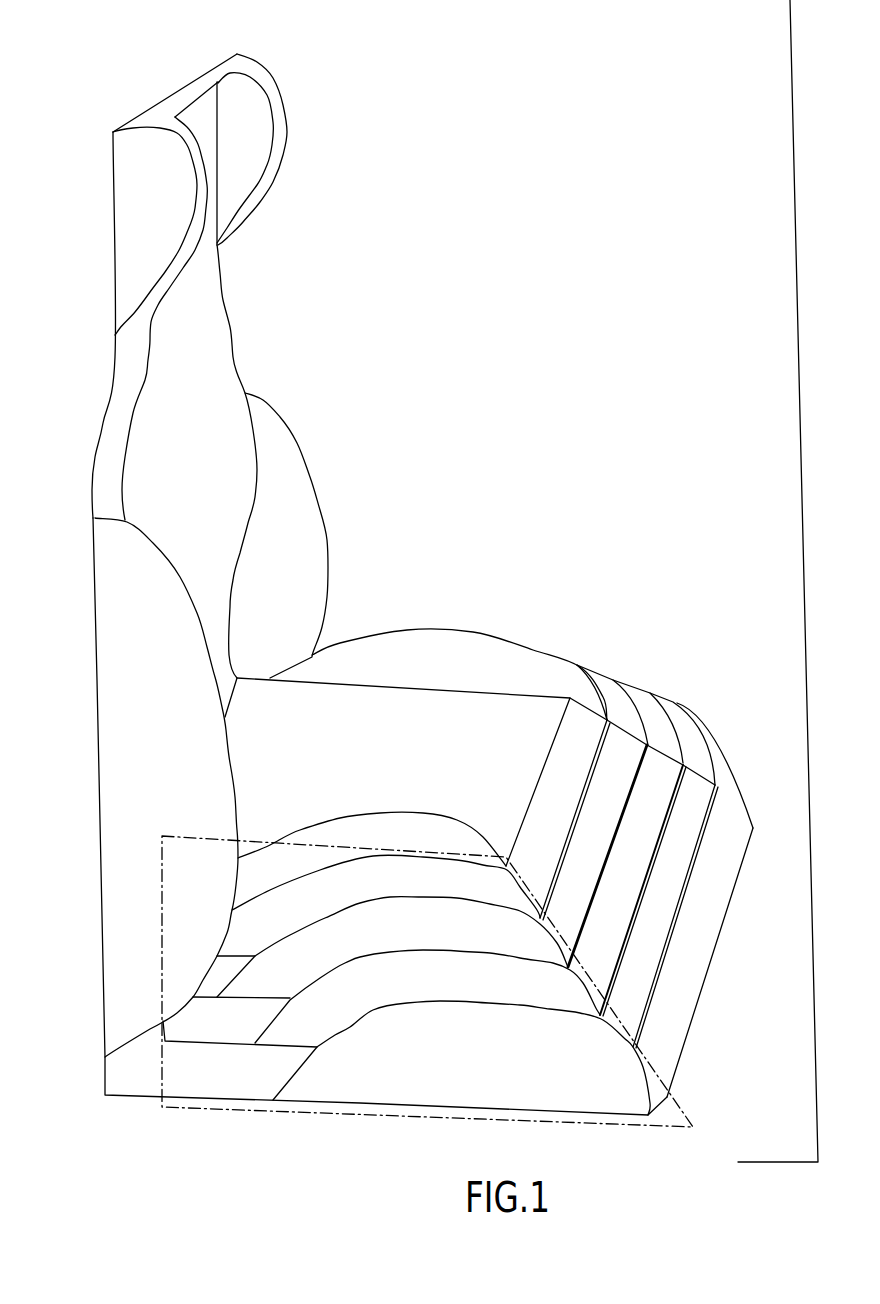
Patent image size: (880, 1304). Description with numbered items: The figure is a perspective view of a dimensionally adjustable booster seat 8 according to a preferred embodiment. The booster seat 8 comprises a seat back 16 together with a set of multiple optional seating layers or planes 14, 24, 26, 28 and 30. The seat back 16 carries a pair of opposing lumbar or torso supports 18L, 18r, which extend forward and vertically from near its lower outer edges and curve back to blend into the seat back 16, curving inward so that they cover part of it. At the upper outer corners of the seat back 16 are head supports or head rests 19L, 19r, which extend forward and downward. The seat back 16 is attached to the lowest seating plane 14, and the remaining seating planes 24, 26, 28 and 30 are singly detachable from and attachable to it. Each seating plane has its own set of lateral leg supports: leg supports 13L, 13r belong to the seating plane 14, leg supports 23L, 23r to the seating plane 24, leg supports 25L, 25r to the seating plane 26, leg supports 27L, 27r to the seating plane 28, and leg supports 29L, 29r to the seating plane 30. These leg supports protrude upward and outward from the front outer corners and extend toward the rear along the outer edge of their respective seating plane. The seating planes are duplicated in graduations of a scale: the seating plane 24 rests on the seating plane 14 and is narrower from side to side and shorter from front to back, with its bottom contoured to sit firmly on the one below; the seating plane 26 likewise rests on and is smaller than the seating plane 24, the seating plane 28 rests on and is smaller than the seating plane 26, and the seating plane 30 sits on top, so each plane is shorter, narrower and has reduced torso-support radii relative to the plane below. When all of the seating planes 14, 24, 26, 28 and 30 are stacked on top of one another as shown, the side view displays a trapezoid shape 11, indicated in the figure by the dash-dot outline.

The booster seat 8 is at (801, 393).
The trapezoid shape 11 is at (683, 1101).
The lateral leg support 13L is at (727, 765).
The lateral leg support 13r is at (497, 1041).
The seating plane 14 is at (707, 938).
The seat back 16 is at (209, 487).
The torso support 18L is at (303, 589).
The torso support 18r is at (173, 809).
The head rest 19L is at (265, 166).
The head rest 19r is at (175, 233).
The lateral leg support 23L is at (673, 700).
The lateral leg support 23r is at (475, 986).
The seating plane 24 is at (677, 903).
The lateral leg support 25L is at (632, 688).
The lateral leg support 25r is at (472, 941).
The seating plane 26 is at (645, 871).
The lateral leg support 27L is at (586, 664).
The lateral leg support 27r is at (444, 893).
The seating plane 28 is at (609, 836).
The lateral leg support 29L is at (459, 671).
The lateral leg support 29r is at (438, 846).
The seating plane 30 is at (410, 757).